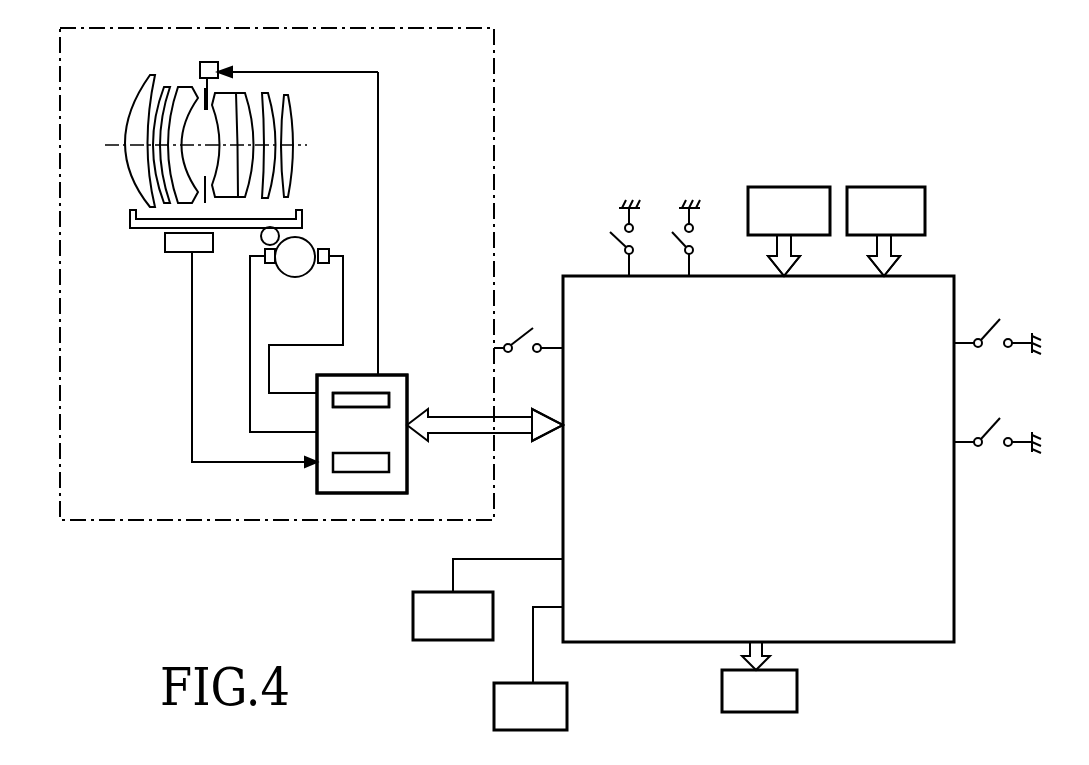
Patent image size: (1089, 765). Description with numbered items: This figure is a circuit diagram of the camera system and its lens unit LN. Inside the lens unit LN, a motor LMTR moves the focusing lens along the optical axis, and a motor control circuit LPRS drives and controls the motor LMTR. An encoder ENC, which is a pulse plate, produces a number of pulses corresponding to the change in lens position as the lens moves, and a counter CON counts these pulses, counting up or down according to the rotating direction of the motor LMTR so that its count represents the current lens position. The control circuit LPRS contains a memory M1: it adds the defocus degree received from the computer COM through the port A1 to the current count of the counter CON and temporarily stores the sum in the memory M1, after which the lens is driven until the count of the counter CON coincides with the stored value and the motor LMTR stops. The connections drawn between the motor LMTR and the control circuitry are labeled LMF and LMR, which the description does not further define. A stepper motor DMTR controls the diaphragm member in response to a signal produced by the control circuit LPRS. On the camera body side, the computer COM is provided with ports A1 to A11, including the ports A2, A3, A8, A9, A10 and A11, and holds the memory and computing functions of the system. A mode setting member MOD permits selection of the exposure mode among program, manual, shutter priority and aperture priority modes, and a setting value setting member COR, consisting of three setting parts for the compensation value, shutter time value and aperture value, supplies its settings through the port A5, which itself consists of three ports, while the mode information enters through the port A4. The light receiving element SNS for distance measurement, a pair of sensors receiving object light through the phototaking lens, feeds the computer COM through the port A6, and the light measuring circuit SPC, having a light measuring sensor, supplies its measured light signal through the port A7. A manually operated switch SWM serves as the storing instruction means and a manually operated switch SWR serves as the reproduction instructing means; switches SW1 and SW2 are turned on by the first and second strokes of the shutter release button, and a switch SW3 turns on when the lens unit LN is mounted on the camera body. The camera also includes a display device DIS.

The lens unit LN is at (496, 72).
The stepper motor DMTR is at (213, 62).
The encoder ENC is at (173, 251).
The motor LMTR is at (307, 243).
The motor forward signal line LMF is at (306, 326).
The motor reverse signal line LMR is at (283, 346).
The counter CON is at (362, 434).
The memory M1 is at (350, 394).
The motor control circuit LPRS is at (398, 375).
The computer COM is at (758, 459).
The switch SW3 is at (524, 337).
The port A11 is at (577, 357).
The port A1 is at (566, 428).
The switch SWM is at (614, 234).
The switch SWR is at (680, 230).
The port A2 is at (637, 286).
The port A3 is at (697, 286).
The mode setting member MOD is at (789, 231).
The setting value setting member COR is at (886, 231).
The port A4 is at (785, 276).
The port A5 is at (885, 276).
The switch SW1 is at (993, 348).
The switch SW2 is at (993, 447).
The port A8 is at (949, 352).
The port A9 is at (949, 452).
The port A6 is at (525, 569).
The port A7 is at (565, 639).
The light receiving element SNS is at (453, 616).
The light measuring circuit SPC is at (530, 706).
The port A10 is at (765, 638).
The display device DIS is at (759, 691).